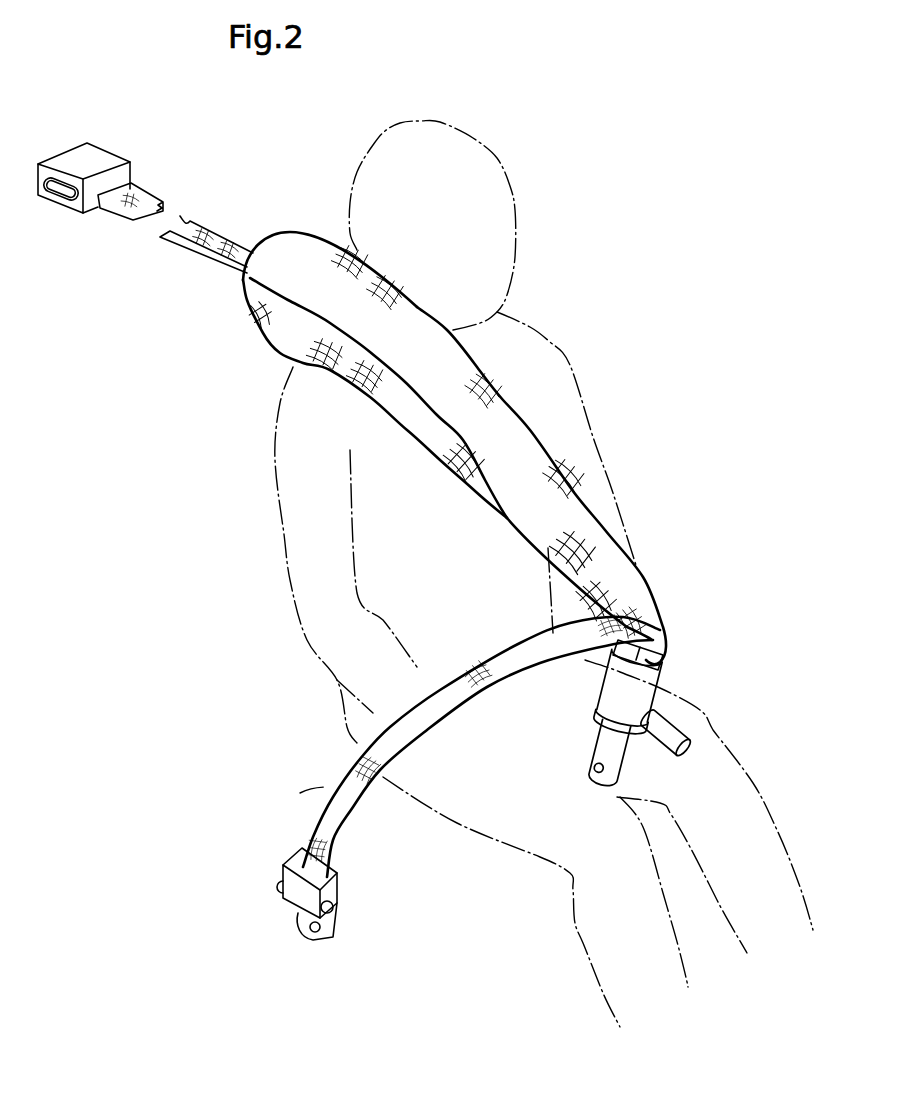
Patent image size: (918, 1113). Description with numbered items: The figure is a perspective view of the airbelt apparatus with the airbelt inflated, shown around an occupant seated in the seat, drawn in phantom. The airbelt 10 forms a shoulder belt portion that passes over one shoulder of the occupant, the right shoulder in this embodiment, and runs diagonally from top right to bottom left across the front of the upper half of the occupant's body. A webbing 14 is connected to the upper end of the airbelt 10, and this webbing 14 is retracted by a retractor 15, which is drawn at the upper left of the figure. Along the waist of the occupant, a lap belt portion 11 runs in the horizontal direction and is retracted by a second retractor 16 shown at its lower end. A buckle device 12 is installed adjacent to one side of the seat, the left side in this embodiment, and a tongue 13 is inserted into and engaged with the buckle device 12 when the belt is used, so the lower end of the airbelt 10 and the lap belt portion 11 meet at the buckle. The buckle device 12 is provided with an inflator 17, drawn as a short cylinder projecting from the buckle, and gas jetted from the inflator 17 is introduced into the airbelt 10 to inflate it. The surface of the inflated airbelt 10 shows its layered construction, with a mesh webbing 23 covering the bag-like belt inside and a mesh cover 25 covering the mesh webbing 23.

The airbelt 10 is at (531, 397).
The lap belt portion 11 is at (331, 796).
The buckle device 12 is at (610, 700).
The tongue 13 is at (667, 660).
The webbing 14 is at (222, 237).
The retractor 15 is at (88, 160).
The retractor 16 is at (300, 900).
The inflator 17 is at (683, 721).
The mesh webbing 23 is at (302, 250).
The mesh cover 25 is at (278, 338).